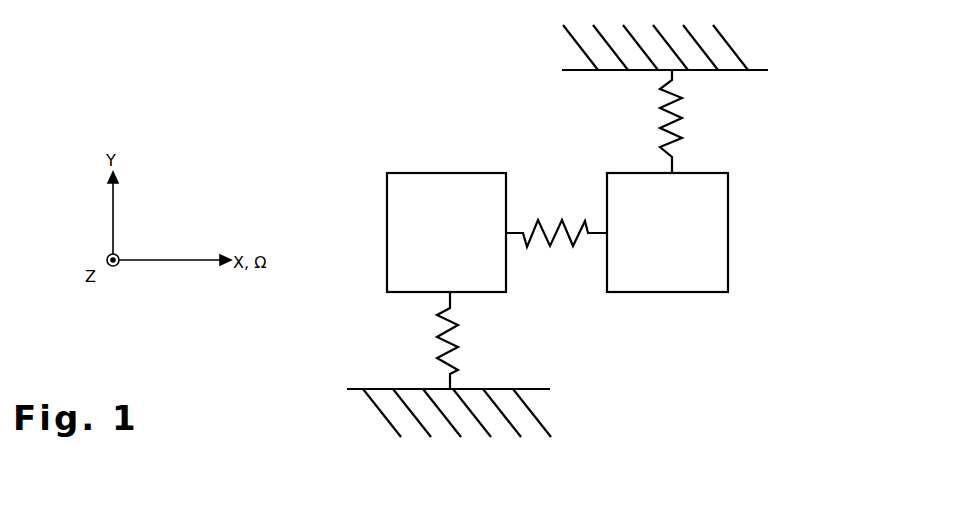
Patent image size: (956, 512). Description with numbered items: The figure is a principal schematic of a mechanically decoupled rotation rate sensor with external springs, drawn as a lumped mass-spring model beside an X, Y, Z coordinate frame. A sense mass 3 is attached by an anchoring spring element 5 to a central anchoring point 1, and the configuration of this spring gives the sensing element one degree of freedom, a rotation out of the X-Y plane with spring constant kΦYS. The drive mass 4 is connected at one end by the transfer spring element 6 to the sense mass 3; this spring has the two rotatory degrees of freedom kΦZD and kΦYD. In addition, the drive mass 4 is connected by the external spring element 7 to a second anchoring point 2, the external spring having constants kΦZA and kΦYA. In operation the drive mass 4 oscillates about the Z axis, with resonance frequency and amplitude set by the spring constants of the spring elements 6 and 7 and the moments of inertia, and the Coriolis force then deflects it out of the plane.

The central anchoring point 1 is at (355, 389).
The anchoring point 2 is at (560, 68).
The sense mass 3 is at (387, 172).
The drive mass 4 is at (730, 295).
The anchoring spring element 5 is at (435, 330).
The transfer spring element 6 is at (550, 243).
The external spring element 7 is at (657, 118).